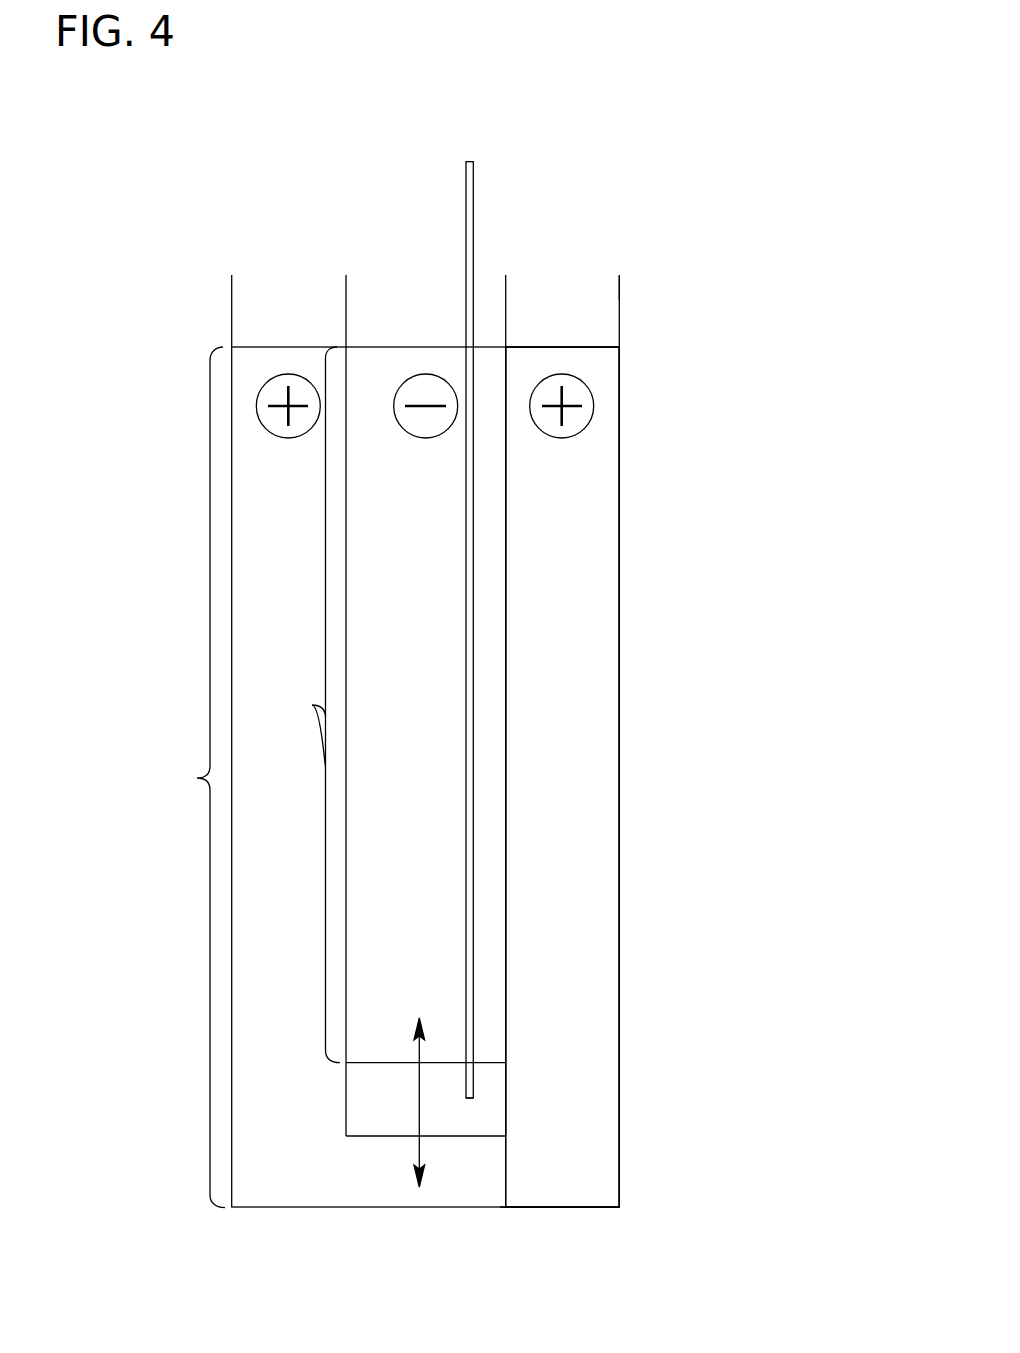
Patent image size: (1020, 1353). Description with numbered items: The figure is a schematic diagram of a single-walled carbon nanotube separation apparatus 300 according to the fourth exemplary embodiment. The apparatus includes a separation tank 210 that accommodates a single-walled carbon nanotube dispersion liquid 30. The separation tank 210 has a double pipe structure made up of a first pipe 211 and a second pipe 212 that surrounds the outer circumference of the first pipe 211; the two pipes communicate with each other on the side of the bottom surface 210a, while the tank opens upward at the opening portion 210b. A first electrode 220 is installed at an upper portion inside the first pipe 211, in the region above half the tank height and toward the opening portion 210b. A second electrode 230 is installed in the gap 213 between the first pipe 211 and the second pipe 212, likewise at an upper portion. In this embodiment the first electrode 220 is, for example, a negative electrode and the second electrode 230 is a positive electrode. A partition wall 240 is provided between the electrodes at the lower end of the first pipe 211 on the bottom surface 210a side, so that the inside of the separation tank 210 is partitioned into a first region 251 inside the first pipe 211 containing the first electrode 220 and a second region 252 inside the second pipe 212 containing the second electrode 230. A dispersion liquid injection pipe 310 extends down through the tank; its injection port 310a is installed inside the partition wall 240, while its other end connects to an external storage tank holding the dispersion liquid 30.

The single-walled carbon nanotube separation apparatus 300 is at (727, 134).
The dispersion liquid injection pipe 310 is at (473, 187).
The injection port 310a is at (468, 1100).
The separation tank 210 is at (619, 318).
The bottom surface 210a is at (551, 1207).
The opening portion 210b is at (619, 297).
The first pipe 211 is at (506, 490).
The second pipe 212 is at (619, 537).
The gap 213 is at (585, 587).
The first electrode 220 is at (427, 374).
The second electrode 230 is at (587, 387).
The partition wall 240 is at (486, 1060).
The first region 251 is at (301, 705).
The second region 252 is at (186, 777).
The single-walled carbon nanotube dispersion liquid 30 is at (593, 770).